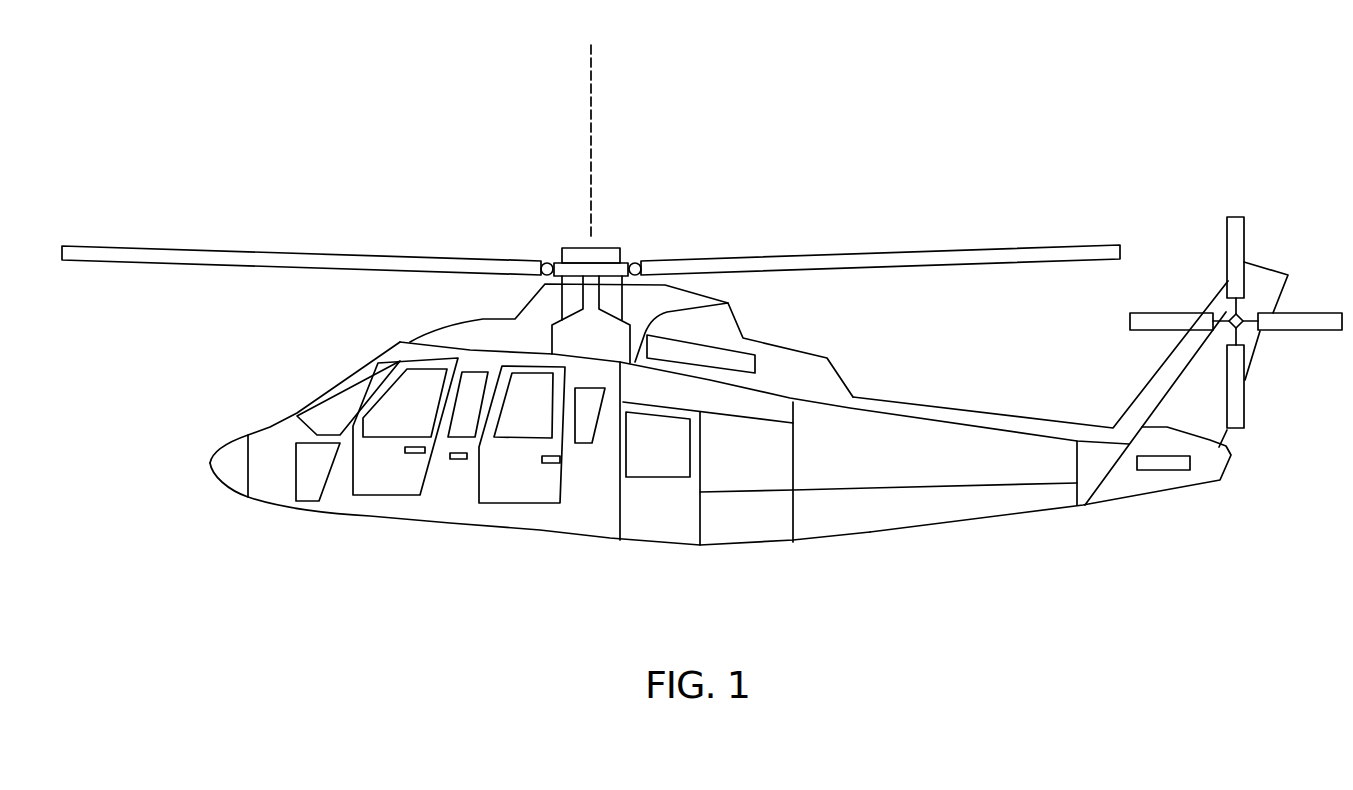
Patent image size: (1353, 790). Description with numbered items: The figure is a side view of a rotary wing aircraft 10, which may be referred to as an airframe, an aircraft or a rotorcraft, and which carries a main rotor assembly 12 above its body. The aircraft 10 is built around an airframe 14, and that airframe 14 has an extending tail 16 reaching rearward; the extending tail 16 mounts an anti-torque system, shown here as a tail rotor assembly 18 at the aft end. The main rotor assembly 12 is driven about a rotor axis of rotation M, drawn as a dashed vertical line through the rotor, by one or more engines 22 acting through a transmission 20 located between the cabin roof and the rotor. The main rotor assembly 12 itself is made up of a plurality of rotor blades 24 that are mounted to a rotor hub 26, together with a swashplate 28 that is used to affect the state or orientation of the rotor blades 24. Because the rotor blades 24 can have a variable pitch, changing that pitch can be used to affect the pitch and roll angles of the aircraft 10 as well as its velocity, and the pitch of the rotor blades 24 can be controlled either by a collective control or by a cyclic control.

The rotary wing aircraft 10 is at (808, 93).
The main rotor assembly 12 is at (568, 245).
The airframe 14 is at (423, 503).
The extending tail 16 is at (945, 512).
The tail rotor assembly 18 is at (1251, 254).
The transmission 20 is at (572, 339).
The engine 22 is at (735, 357).
The rotor blade 24 is at (832, 255).
The rotor hub 26 is at (607, 246).
The swashplate 28 is at (627, 262).
The rotor axis of rotation M is at (590, 85).